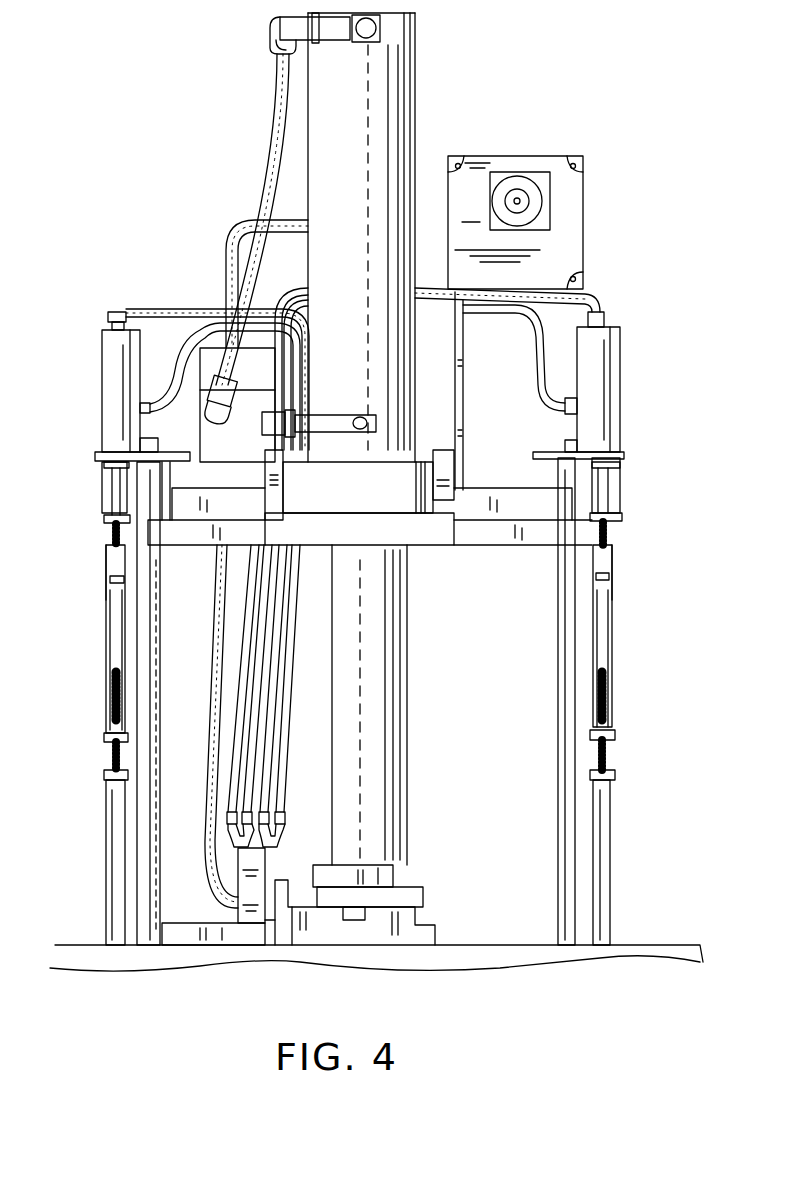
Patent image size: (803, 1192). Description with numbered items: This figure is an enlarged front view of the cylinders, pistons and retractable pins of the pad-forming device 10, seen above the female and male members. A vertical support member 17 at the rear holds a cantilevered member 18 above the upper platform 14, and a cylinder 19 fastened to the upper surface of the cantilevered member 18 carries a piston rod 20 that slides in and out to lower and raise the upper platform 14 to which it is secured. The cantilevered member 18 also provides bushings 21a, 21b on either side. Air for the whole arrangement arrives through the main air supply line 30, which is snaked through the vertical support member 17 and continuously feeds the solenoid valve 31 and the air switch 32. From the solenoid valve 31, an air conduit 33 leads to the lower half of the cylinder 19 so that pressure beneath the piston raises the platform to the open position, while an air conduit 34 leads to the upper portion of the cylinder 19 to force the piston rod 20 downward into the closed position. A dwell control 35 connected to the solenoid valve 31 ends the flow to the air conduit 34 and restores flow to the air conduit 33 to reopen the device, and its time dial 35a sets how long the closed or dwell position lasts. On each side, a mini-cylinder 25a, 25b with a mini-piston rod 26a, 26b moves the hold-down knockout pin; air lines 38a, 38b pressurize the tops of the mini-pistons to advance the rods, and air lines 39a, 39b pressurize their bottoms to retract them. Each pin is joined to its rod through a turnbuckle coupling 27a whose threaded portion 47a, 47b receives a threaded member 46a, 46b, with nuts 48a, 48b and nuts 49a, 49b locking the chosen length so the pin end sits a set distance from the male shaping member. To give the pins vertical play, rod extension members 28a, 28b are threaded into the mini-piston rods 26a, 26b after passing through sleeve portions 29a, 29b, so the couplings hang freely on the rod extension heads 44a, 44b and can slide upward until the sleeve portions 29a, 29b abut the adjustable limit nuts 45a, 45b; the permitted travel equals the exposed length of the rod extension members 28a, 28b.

The pad-forming device 10 is at (492, 118).
The upper platform 14 is at (612, 942).
The vertical support member 17 is at (400, 684).
The cantilevered member 18 is at (460, 538).
The cylinder 19 is at (398, 88).
The piston rod 20 is at (370, 618).
The bushing 21a is at (104, 492).
The bushing 21b is at (620, 478).
The mini-cylinder 25a is at (102, 408).
The mini-cylinder 25b is at (608, 380).
The mini-piston rod 26a is at (116, 505).
The mini-piston rod 26b is at (605, 500).
The turnbuckle coupling 27a is at (104, 634).
The rod extension member 28a is at (106, 540).
The rod extension member 28b is at (605, 533).
The sleeve portion 29a is at (110, 560).
The sleeve portion 29b is at (605, 558).
The main air supply line 30 is at (243, 225).
The solenoid valve 31 is at (210, 355).
The air switch 32 is at (238, 905).
The air conduit 33 is at (278, 120).
The air conduit 34 is at (318, 420).
The dwell control 35 is at (525, 157).
The time dial 35a is at (520, 201).
The air line 38a is at (150, 310).
The air line 38b is at (558, 292).
The air line 39a is at (170, 378).
The air line 39b is at (542, 340).
The rod extension head 44a is at (118, 578).
The rod extension head 44b is at (607, 577).
The adjustable limit nut 45a is at (108, 520).
The adjustable limit nut 45b is at (606, 518).
The threaded member 46a is at (112, 757).
The threaded member 46b is at (606, 757).
The threaded portion 47a is at (108, 702).
The threaded portion 47b is at (606, 720).
The nut 48a is at (112, 735).
The nut 48b is at (608, 735).
The nut 49a is at (112, 776).
The nut 49b is at (608, 777).